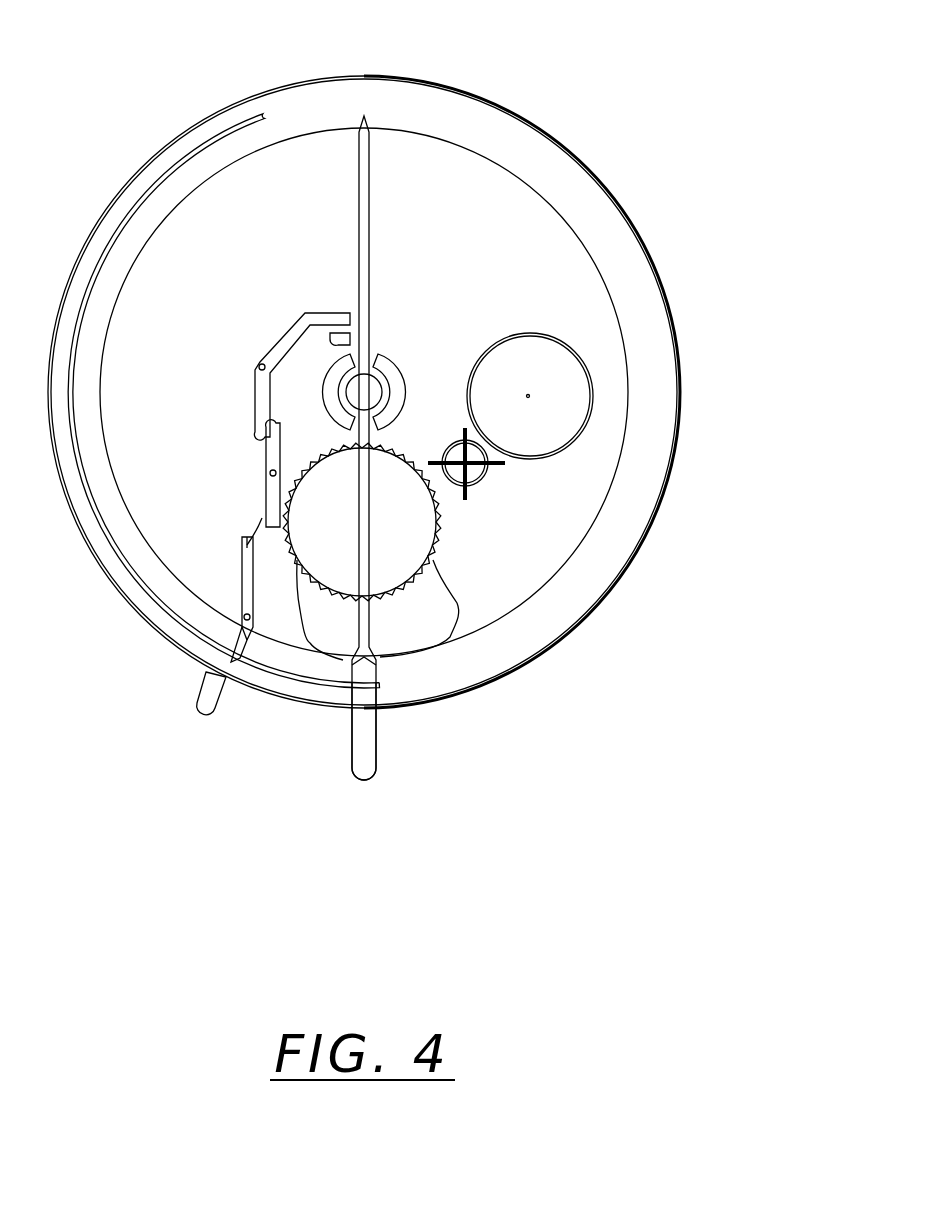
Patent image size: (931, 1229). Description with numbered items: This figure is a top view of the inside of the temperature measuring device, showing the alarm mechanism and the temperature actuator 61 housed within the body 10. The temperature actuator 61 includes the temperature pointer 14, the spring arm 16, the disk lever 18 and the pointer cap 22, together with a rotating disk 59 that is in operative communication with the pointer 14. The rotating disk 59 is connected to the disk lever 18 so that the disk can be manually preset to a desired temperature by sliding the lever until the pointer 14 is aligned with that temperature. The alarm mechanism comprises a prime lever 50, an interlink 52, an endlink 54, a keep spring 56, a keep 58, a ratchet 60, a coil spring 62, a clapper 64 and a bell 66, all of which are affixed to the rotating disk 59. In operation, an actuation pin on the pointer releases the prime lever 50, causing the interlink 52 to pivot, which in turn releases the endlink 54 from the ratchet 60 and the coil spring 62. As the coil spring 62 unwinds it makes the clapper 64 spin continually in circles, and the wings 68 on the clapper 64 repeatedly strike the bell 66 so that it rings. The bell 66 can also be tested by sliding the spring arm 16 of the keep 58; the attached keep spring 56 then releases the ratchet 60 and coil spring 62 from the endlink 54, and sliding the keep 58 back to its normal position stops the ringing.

The body 10 is at (668, 295).
The temperature pointer 14 is at (373, 163).
The spring arm 16 is at (197, 700).
The disk lever 18 is at (362, 730).
The pointer cap 22 is at (375, 385).
The prime lever 50 is at (350, 330).
The interlink 52 is at (275, 345).
The endlink 54 is at (270, 460).
The keep spring 56 is at (257, 520).
The keep 58 is at (243, 593).
The rotating disk 59 is at (462, 195).
The ratchet 60 is at (317, 548).
The temperature actuator 61 is at (357, 192).
The coil spring 62 is at (402, 535).
The clapper 64 is at (488, 465).
The bell 66 is at (560, 397).
The wings 68 is at (480, 482).